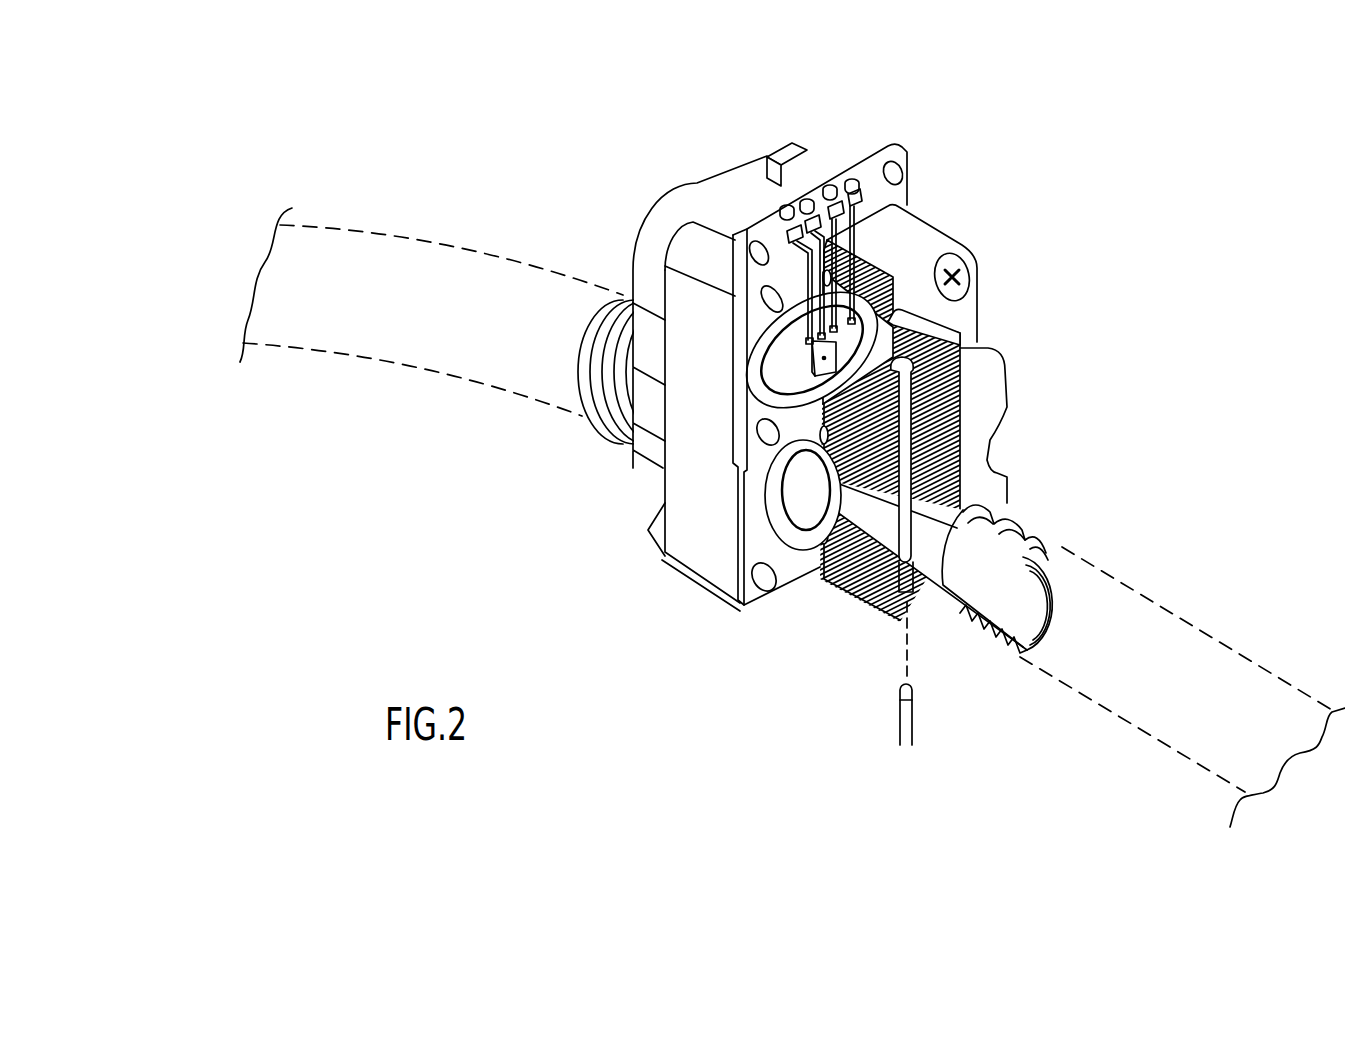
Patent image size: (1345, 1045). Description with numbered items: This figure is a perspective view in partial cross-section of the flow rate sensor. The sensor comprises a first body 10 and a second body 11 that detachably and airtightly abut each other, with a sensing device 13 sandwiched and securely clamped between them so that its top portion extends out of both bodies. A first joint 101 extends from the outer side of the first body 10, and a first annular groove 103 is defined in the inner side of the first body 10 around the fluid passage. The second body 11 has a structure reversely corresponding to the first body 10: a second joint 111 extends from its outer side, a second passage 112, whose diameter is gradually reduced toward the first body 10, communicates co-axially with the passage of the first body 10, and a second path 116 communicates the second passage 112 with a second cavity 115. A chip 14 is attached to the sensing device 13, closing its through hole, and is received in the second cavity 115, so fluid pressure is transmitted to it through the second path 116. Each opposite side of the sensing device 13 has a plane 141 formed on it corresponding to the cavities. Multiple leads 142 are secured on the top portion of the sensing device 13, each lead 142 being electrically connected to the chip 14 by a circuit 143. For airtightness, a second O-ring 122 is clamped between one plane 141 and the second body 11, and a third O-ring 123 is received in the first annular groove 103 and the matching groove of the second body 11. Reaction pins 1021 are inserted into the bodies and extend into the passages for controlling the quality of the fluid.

The first body 10 is at (767, 197).
The second body 11 is at (903, 240).
The sensing device 13 is at (737, 236).
The chip 14 is at (793, 370).
The first joint 101 is at (607, 382).
The first annular groove 103 is at (783, 533).
The second joint 111 is at (1040, 537).
The second passage 112 is at (900, 522).
The second cavity 115 is at (870, 370).
The second path 116 is at (907, 447).
The second O-ring 122 is at (963, 272).
The third O-ring 123 is at (818, 547).
The plane 141 is at (787, 373).
The leads 142 is at (830, 187).
The circuit 143 is at (903, 180).
The reaction pins 1021 is at (898, 715).